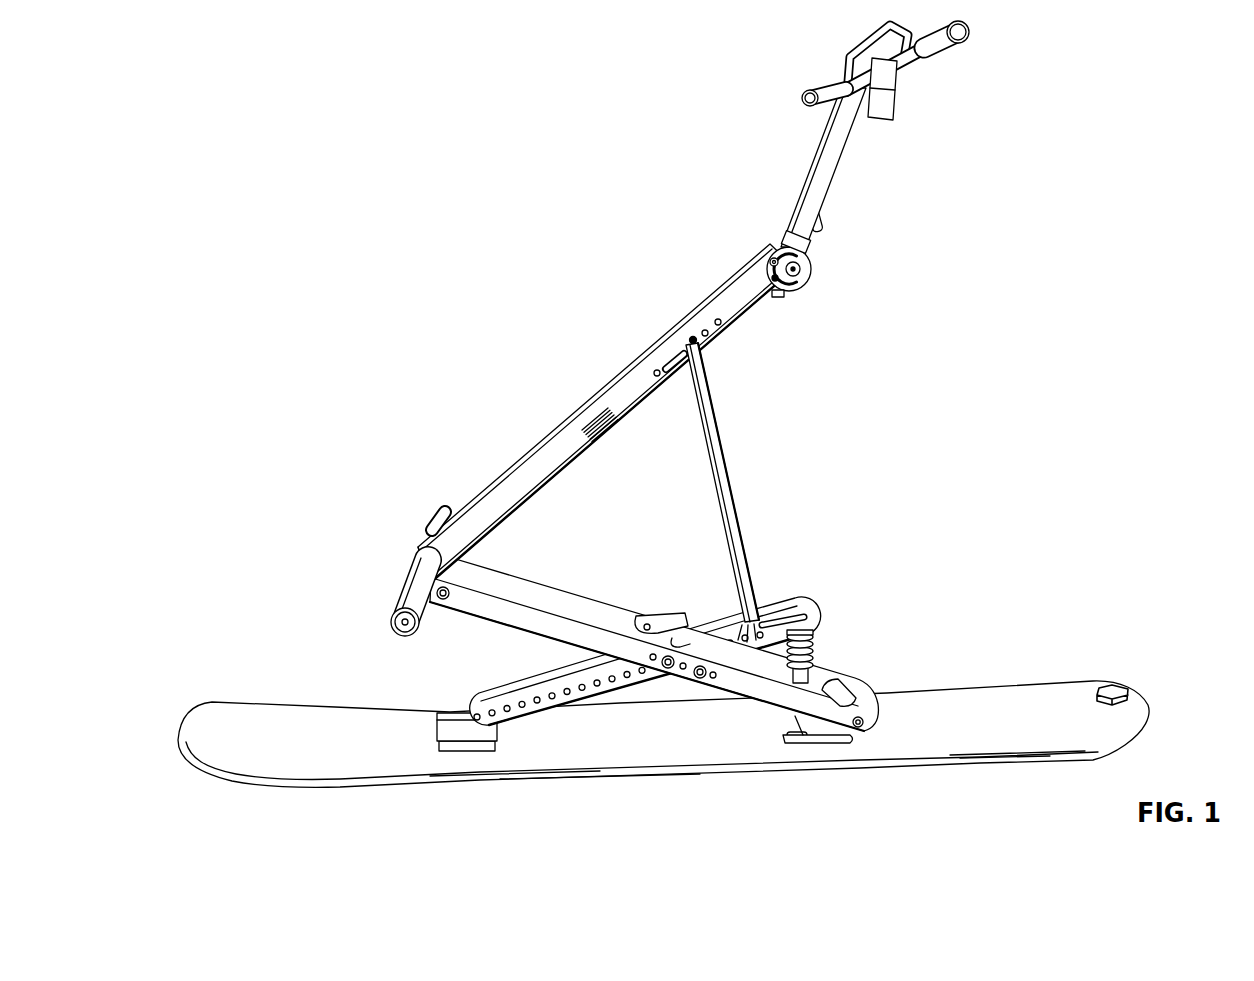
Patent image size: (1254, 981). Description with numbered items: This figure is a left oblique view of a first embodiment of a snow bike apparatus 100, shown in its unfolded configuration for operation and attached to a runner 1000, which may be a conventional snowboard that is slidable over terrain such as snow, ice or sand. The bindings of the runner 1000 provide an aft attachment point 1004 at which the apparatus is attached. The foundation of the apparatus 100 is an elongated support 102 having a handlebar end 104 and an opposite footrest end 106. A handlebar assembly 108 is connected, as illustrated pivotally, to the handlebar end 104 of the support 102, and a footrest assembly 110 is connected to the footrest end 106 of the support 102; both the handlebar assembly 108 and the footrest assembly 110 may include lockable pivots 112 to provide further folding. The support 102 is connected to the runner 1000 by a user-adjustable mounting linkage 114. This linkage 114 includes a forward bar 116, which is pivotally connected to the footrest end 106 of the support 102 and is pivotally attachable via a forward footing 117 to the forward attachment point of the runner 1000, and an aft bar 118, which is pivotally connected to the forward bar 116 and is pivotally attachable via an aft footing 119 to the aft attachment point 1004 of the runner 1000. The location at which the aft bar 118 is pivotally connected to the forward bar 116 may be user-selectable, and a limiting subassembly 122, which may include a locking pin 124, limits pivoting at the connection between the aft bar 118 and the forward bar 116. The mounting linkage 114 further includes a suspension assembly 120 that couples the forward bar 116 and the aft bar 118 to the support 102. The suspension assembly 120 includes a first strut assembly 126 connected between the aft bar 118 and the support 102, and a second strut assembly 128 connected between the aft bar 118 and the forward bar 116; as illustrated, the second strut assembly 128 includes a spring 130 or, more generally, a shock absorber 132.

The snow bike apparatus 100 is at (673, 424).
The elongated support 102 is at (622, 373).
The handlebar end 104 is at (743, 270).
The footrest end 106 is at (460, 510).
The handlebar assembly 108 is at (850, 137).
The footrest assembly 110 is at (402, 593).
The lockable pivots 112 is at (883, 113).
The user-adjustable mounting linkage 114 is at (713, 594).
The forward bar 116 is at (607, 603).
The forward footing 117 is at (837, 737).
The aft bar 118 is at (775, 600).
The aft footing 119 is at (447, 722).
The suspension assembly 120 is at (924, 573).
The limiting subassembly 122 is at (728, 622).
The locking pin 124 is at (698, 676).
The first strut assembly 126 is at (715, 420).
The second strut assembly 128 is at (822, 615).
The spring 130 is at (815, 660).
The shock absorber 132 is at (800, 675).
The runner 1000 is at (295, 733).
The aft attachment point 1004 is at (447, 750).